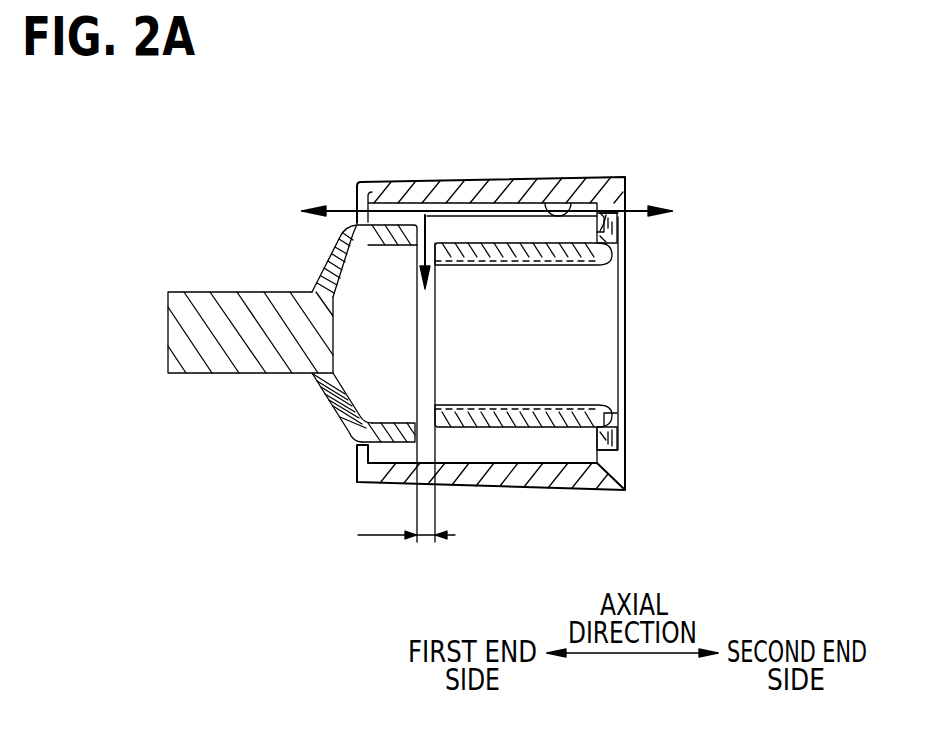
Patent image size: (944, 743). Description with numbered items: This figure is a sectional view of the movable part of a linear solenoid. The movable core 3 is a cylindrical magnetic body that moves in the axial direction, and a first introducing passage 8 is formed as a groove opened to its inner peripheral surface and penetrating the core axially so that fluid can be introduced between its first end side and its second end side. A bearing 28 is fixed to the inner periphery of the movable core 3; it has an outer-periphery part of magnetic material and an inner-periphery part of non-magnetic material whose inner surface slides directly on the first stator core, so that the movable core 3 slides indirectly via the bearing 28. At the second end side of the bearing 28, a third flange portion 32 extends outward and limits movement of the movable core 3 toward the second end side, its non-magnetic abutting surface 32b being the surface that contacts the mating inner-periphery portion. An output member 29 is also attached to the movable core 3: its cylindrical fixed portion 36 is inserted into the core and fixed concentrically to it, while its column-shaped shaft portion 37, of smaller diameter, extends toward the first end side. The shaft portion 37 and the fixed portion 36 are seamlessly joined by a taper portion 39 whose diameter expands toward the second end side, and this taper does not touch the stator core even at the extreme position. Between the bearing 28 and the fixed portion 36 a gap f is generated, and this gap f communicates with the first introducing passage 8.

The movable core 3 is at (512, 186).
The first introducing passage 8 is at (568, 213).
The bearing 28 is at (553, 264).
The third flange portion 32 is at (619, 248).
The abutting surface 32b is at (620, 232).
The output member 29 is at (279, 339).
The shaft portion 37 is at (228, 343).
The taper portion 39 is at (338, 403).
The fixed portion 36 is at (390, 435).
The gap f is at (425, 540).